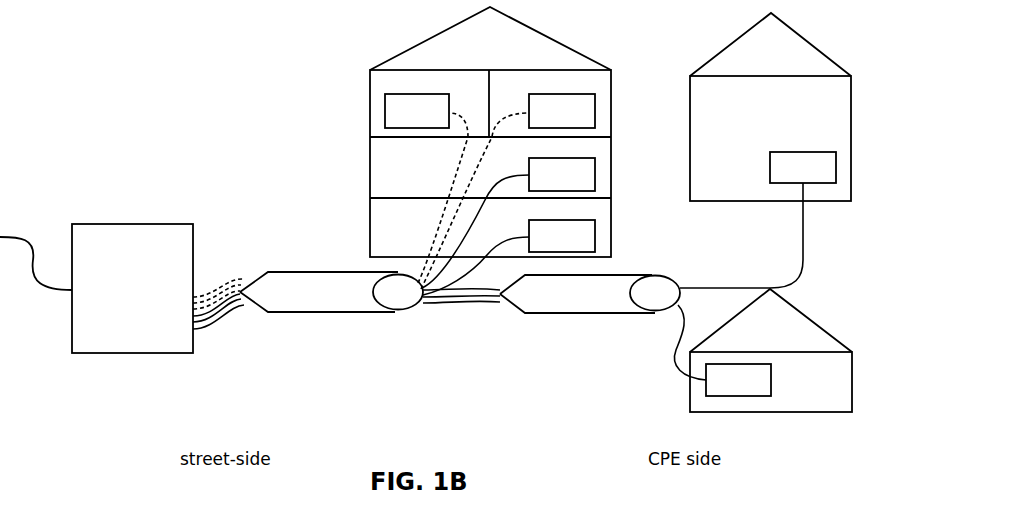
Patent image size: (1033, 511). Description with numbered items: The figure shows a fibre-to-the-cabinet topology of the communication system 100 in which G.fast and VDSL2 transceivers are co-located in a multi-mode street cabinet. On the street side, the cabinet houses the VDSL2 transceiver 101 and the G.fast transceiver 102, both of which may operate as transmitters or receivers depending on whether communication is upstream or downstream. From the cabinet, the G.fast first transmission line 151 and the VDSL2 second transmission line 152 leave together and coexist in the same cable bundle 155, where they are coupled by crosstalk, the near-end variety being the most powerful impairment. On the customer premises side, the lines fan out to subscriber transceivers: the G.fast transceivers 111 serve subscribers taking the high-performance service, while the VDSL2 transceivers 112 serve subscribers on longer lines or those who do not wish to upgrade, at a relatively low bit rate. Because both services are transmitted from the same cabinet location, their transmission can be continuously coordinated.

The system 100 is at (66, 72).
The transceiver 101 is at (110, 253).
The transceiver 102 is at (190, 253).
The transceiver 111 is at (595, 175).
The transceiver 112 is at (385, 113).
The first transmission line 151 is at (233, 330).
The second transmission line 152 is at (231, 273).
The cable bundle 155 is at (326, 272).